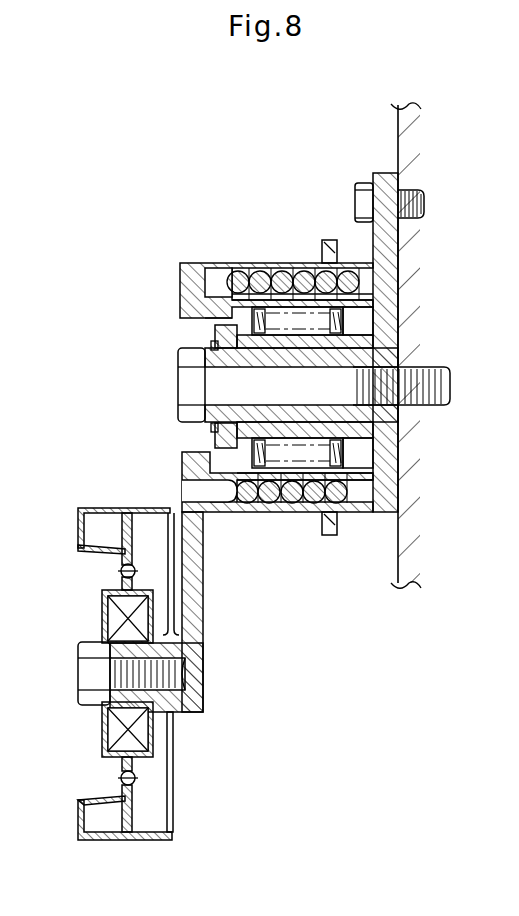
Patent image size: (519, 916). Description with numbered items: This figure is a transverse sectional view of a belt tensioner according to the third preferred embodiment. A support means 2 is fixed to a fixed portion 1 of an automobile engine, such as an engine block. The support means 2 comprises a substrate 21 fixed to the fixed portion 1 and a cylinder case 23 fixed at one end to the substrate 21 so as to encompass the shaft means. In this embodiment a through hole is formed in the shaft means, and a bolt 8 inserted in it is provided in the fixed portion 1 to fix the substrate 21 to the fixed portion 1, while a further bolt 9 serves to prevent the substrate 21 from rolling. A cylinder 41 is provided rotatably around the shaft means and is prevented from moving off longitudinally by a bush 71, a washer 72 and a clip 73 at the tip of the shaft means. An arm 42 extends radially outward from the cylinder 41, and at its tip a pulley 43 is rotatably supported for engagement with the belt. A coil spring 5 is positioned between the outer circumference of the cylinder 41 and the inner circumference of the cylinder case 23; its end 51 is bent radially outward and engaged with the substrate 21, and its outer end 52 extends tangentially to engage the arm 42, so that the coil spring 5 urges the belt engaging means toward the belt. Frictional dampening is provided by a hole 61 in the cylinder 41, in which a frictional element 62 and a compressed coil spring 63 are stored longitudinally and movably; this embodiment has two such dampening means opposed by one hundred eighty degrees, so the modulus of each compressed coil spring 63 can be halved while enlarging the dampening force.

The fixed portion 1 is at (397, 132).
The support means 2 is at (432, 342).
The coil spring 5 is at (228, 285).
The bolt 8 is at (190, 382).
The bolt 9 is at (350, 192).
The substrate 21 is at (387, 453).
The cylinder case 23 is at (300, 379).
The cylinder 41 is at (217, 323).
The arm 42 is at (203, 596).
The pulley 43 is at (93, 508).
The end of the coil spring 51 is at (385, 283).
The outer end of the coil spring 52 is at (197, 493).
The hole 61 is at (303, 306).
The frictional element 62 is at (360, 320).
The compressed coil spring 63 is at (232, 317).
The bush 71 is at (213, 338).
The washer 72 is at (214, 440).
The clip 73 is at (213, 428).